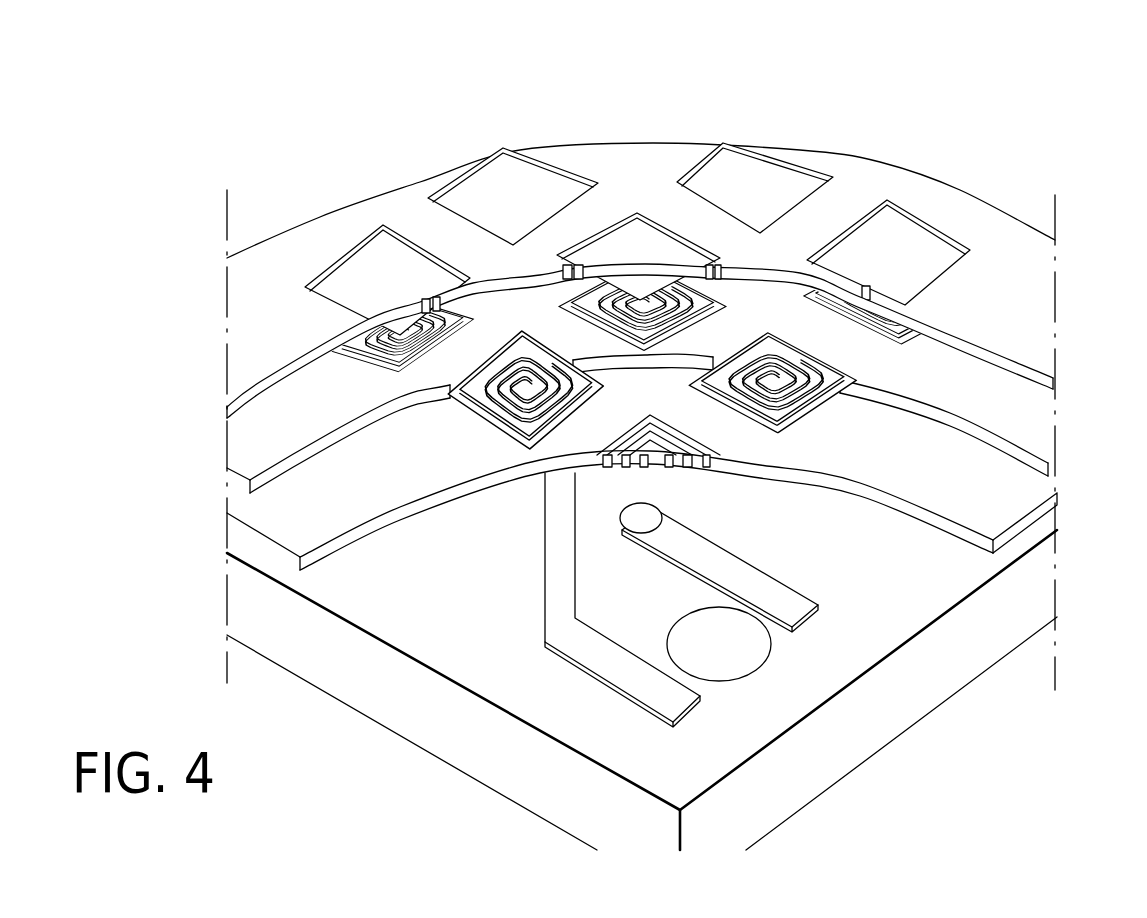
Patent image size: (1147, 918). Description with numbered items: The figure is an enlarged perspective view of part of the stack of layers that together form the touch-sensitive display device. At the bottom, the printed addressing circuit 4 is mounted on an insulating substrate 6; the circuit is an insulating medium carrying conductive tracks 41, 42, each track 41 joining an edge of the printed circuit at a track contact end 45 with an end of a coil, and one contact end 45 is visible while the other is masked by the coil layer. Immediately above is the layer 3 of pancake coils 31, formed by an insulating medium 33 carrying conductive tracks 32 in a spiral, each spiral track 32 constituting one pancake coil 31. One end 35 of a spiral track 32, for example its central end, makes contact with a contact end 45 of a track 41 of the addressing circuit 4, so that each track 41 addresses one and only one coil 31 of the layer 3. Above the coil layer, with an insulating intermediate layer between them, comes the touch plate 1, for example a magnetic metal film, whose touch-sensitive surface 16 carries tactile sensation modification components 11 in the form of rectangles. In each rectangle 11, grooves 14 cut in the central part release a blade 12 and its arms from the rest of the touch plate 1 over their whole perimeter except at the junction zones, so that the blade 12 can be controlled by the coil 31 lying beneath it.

The touch plate 1 is at (671, 229).
The layer of coils 3 is at (673, 424).
The printed addressing circuit 4 is at (428, 645).
The insulating substrate 6 is at (943, 686).
The tactile sensation modification component 11 is at (753, 122).
The blade 12 is at (797, 178).
The groove 14 is at (560, 160).
The touch-sensitive surface 16 is at (950, 235).
The pancake coil 31 is at (818, 421).
The conductive track in a spiral 32 is at (855, 370).
The insulating medium 33 is at (1058, 492).
The end of conductive track 35 is at (527, 400).
The conductive track 41 is at (788, 596).
The conductive track 42 is at (632, 680).
The track contact end 45 is at (654, 513).